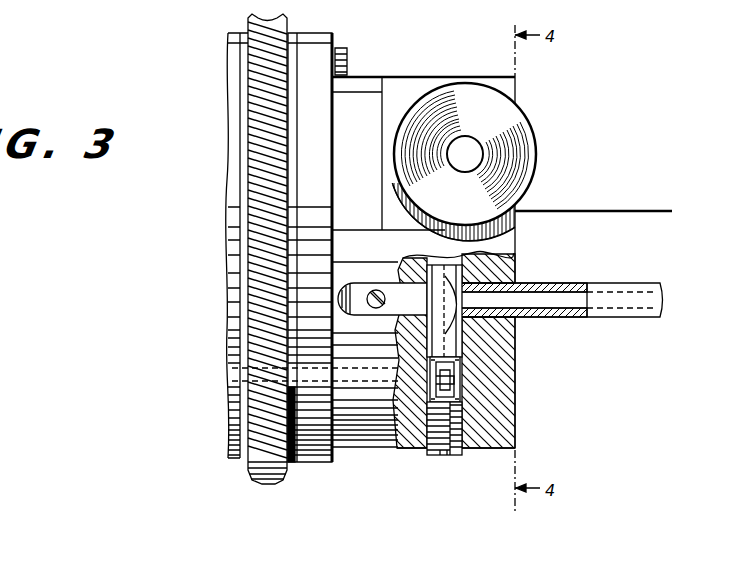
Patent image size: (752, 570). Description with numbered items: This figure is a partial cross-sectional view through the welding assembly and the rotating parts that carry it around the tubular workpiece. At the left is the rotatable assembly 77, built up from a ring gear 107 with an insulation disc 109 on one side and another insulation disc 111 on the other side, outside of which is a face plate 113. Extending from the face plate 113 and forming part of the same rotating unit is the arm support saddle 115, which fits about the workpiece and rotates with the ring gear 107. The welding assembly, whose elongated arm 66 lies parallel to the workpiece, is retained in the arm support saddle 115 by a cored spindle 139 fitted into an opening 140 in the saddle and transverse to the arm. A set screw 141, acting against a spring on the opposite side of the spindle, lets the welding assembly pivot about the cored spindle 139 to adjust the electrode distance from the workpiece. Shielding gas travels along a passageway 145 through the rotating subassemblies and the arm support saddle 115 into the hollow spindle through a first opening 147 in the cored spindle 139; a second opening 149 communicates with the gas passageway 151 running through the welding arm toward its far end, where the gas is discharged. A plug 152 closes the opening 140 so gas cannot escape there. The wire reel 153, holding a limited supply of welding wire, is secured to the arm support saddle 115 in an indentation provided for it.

The elongated arm 66 is at (563, 311).
The rotatable assembly 77 is at (238, 462).
The ring gear 107 is at (263, 486).
The insulation disc 109 is at (246, 217).
The insulation disc 111 is at (293, 187).
The face plate 113 is at (321, 463).
The arm support saddle 115 is at (358, 449).
The cored spindle 139 is at (463, 346).
The opening 140 is at (463, 453).
The set screw 141 is at (378, 289).
The passageway 145 is at (268, 364).
The first opening 147 is at (400, 352).
The second opening 149 is at (466, 302).
The gas passageway 151 is at (563, 297).
The plug 152 is at (434, 459).
The wire reel 153 is at (534, 137).